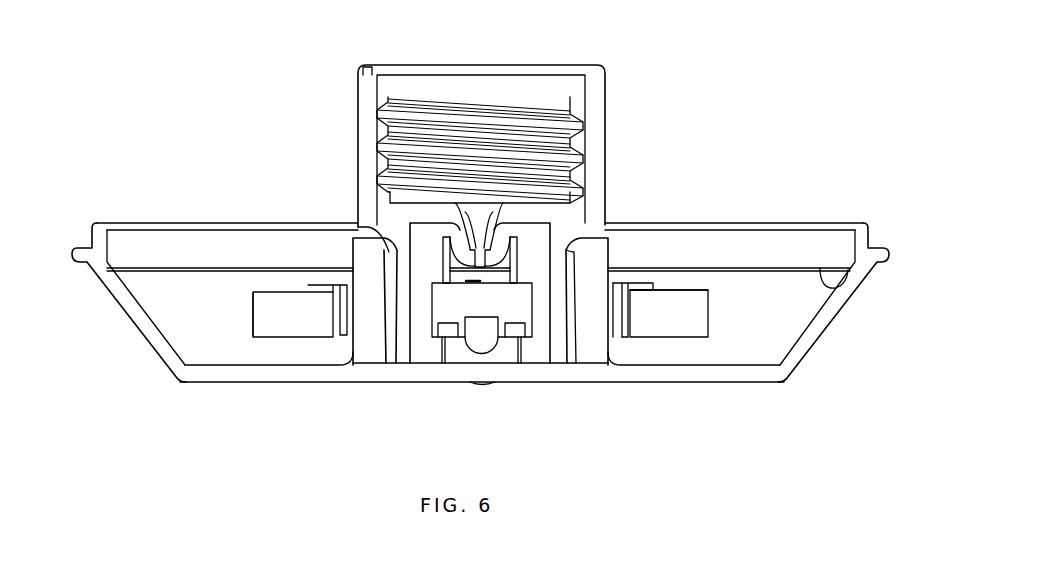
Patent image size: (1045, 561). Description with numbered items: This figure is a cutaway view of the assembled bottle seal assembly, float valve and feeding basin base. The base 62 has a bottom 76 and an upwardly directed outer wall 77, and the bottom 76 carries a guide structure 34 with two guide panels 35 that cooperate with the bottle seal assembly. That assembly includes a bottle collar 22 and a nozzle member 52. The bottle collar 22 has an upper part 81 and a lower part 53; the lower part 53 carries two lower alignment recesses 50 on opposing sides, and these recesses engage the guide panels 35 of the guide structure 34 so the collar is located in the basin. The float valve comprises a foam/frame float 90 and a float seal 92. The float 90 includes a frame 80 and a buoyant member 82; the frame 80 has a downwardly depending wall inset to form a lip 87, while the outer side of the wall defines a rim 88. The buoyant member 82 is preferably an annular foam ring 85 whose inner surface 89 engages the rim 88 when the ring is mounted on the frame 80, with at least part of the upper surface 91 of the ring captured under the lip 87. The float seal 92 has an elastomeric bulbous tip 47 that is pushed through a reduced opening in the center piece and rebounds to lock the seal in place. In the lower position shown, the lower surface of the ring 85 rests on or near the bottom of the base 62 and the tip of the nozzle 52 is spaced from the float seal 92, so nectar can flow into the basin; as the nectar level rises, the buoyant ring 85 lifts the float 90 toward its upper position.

The bottle collar 22 is at (348, 100).
The upper part 81 is at (602, 120).
The guide structure 34 is at (345, 253).
The base 62 is at (127, 312).
The outer wall 77 is at (887, 260).
The bottom 76 is at (243, 383).
The nozzle member 52 is at (550, 222).
The lower alignment recesses 50 is at (510, 238).
The guide panels 35 is at (600, 248).
The lower part 53 is at (567, 303).
The float seal 92 is at (494, 311).
The bulbous tip 47 is at (488, 352).
The rim 88 is at (328, 311).
The foam/frame float 90 is at (252, 323).
The upper surface 91 is at (308, 284).
The buoyant member 82 is at (704, 331).
The lip 87 is at (650, 290).
The frame 80 is at (637, 282).
The annular foam ring 85 is at (693, 310).
The inner surface 89 is at (618, 325).